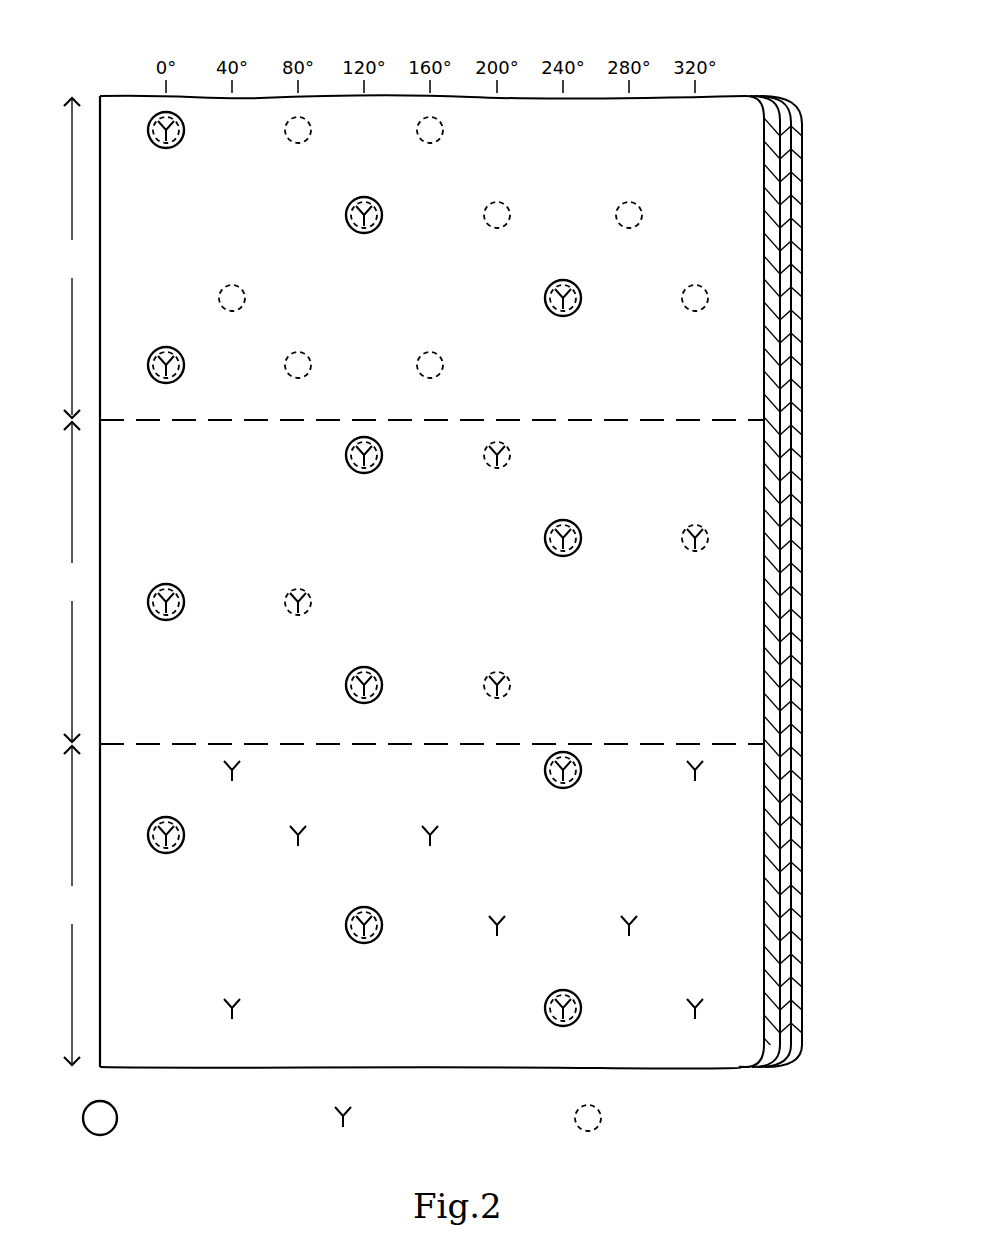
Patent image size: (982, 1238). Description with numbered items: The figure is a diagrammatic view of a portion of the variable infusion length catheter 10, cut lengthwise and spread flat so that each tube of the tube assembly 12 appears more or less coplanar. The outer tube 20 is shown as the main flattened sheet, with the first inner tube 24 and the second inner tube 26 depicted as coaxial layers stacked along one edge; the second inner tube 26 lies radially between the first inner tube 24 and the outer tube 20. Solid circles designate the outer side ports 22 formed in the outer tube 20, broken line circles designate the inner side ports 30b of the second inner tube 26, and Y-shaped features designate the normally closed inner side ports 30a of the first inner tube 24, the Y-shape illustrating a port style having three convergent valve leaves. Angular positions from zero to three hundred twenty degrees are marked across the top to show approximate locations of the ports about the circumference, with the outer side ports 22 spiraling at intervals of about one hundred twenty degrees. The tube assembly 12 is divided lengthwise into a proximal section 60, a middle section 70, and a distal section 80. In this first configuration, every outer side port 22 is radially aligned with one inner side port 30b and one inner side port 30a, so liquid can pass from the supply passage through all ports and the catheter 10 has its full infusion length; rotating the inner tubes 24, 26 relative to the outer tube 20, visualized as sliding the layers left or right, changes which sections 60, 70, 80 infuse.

The variable infusion length catheter 10 is at (118, 57).
The tube assembly 12 is at (90, 95).
The outer tube 20 is at (770, 155).
The second inner tube 26 is at (785, 207).
The first inner tube 24 is at (802, 266).
The outer side ports 22 is at (332, 623).
The inner side ports 30a is at (430, 625).
The inner side ports 30b is at (488, 624).
The proximal section 60 is at (412, 259).
The middle section 70 is at (412, 583).
The distal section 80 is at (71, 905).